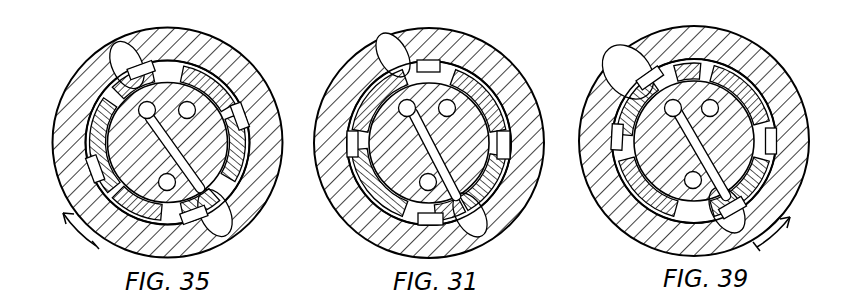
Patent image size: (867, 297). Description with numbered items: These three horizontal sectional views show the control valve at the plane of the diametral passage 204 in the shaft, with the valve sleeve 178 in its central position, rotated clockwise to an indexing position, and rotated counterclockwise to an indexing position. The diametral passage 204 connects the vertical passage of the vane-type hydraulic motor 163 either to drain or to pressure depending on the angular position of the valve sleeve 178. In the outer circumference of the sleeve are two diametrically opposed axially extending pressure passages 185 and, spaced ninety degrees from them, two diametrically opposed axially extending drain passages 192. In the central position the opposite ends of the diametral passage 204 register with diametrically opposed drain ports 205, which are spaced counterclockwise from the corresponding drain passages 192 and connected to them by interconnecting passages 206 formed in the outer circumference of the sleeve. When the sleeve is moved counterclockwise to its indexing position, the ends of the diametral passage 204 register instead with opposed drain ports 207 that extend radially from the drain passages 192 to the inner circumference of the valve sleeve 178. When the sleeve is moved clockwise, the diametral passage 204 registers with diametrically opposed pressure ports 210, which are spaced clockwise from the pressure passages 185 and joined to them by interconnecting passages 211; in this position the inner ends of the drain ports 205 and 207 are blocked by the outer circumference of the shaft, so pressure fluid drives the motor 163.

In FIG. 31, the vane-type hydraulic motor 163 is at (365, 93).
In FIG. 35, the valve sleeve 178 is at (236, 70).
In FIG. 35, the axially extending pressure passages 185 is at (98, 105).
In FIG. 31, the axially extending drain passages 192 is at (458, 35).
In FIG. 39, the axially extending drain passages 192 is at (652, 68).
In FIG. 35, the diametral passage 204 is at (245, 100).
In FIG. 31, the diametral passage 204 is at (476, 65).
In FIG. 31, the drain ports 205 is at (380, 78).
In FIG. 39, the drain ports 205 is at (790, 140).
In FIG. 31, the interconnecting passages 206 is at (403, 66).
In FIG. 39, the drain ports 207 is at (682, 55).
In FIG. 35, the pressure ports 210 is at (112, 78).
In FIG. 35, the interconnecting passages 211 is at (108, 70).